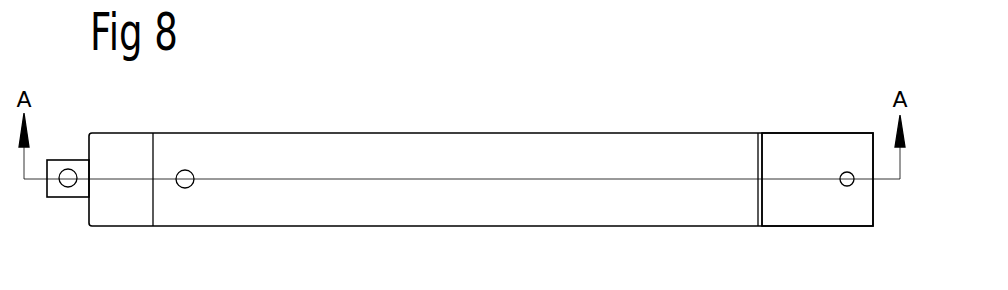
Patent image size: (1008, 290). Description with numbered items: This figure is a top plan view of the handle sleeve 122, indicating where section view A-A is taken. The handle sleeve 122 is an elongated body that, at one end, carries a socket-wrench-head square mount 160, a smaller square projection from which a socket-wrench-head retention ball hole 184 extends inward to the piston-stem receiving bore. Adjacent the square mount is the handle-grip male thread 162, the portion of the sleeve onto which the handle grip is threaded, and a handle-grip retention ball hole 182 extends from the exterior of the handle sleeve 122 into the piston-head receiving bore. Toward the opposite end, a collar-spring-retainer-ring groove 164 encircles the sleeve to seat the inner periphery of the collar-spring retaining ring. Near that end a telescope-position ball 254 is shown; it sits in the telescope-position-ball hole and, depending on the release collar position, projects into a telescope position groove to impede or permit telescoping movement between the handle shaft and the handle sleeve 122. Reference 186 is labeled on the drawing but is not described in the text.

The handle sleeve 122 is at (343, 97).
The socket-wrench-head square mount 160 is at (62, 197).
The handle-grip male thread 162 is at (123, 222).
The collar-spring-retainer-ring groove 164 is at (760, 207).
The handle-grip retention ball hole 182 is at (182, 173).
The socket-wrench-head retention ball hole 184 is at (63, 172).
The second housing section 186 is at (843, 186).
The telescope-position ball 254 is at (845, 172).